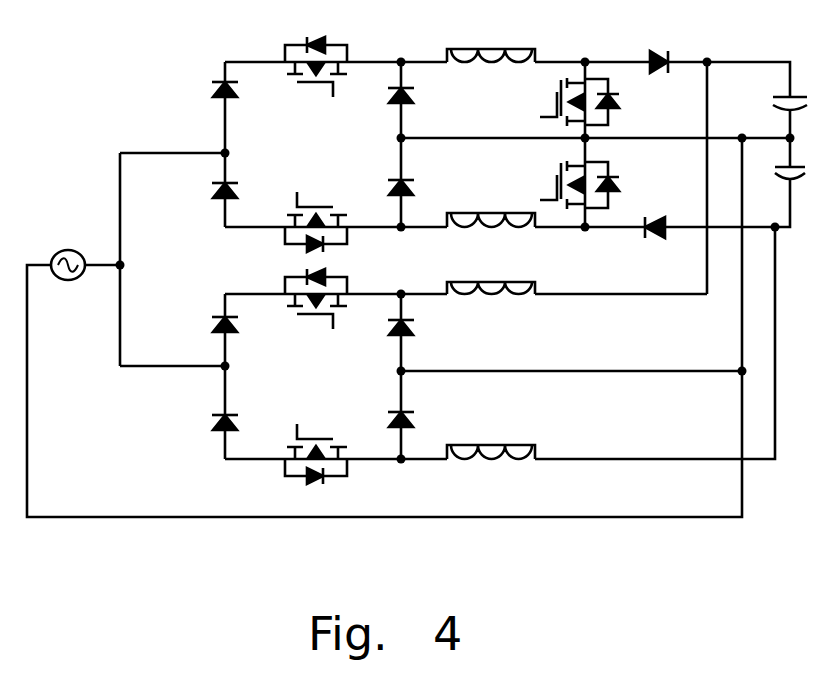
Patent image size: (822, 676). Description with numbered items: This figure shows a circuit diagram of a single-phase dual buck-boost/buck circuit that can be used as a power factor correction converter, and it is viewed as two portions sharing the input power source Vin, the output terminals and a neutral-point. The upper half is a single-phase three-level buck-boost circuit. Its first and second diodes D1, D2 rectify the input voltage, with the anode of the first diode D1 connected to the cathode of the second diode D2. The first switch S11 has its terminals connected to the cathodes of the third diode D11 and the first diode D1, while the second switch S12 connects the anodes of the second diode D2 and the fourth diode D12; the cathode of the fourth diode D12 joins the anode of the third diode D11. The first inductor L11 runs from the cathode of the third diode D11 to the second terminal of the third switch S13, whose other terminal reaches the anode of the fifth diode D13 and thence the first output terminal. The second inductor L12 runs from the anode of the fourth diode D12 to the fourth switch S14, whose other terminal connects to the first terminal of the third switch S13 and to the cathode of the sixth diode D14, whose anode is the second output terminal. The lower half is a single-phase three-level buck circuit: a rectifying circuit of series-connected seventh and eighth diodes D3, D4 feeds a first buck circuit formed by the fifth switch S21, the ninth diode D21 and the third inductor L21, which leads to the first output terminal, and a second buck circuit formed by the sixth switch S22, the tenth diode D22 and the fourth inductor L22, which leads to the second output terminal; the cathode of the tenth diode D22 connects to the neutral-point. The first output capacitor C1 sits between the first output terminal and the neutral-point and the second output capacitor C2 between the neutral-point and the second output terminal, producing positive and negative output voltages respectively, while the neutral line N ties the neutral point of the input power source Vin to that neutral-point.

The first diode D1 is at (212, 104).
The second diode D2 is at (212, 203).
The seventh diode D3 is at (212, 339).
The eighth diode D4 is at (212, 435).
The first switch S11 is at (316, 74).
The second switch S12 is at (316, 215).
The third switch S13 is at (566, 102).
The fourth switch S14 is at (565, 185).
The fifth switch S21 is at (316, 306).
The sixth switch S22 is at (316, 448).
The third diode D11 is at (423, 98).
The fourth diode D12 is at (422, 179).
The fifth diode D13 is at (670, 71).
The sixth diode D14 is at (667, 216).
The ninth diode D21 is at (422, 331).
The tenth diode D22 is at (419, 411).
The first inductor L11 is at (491, 45).
The second inductor L12 is at (491, 230).
The third inductor L21 is at (491, 277).
The fourth inductor L22 is at (491, 465).
The first output capacitor C1 is at (780, 93).
The second output capacitor C2 is at (778, 189).
The input power source Vin is at (70, 254).
The neutral line N is at (59, 500).